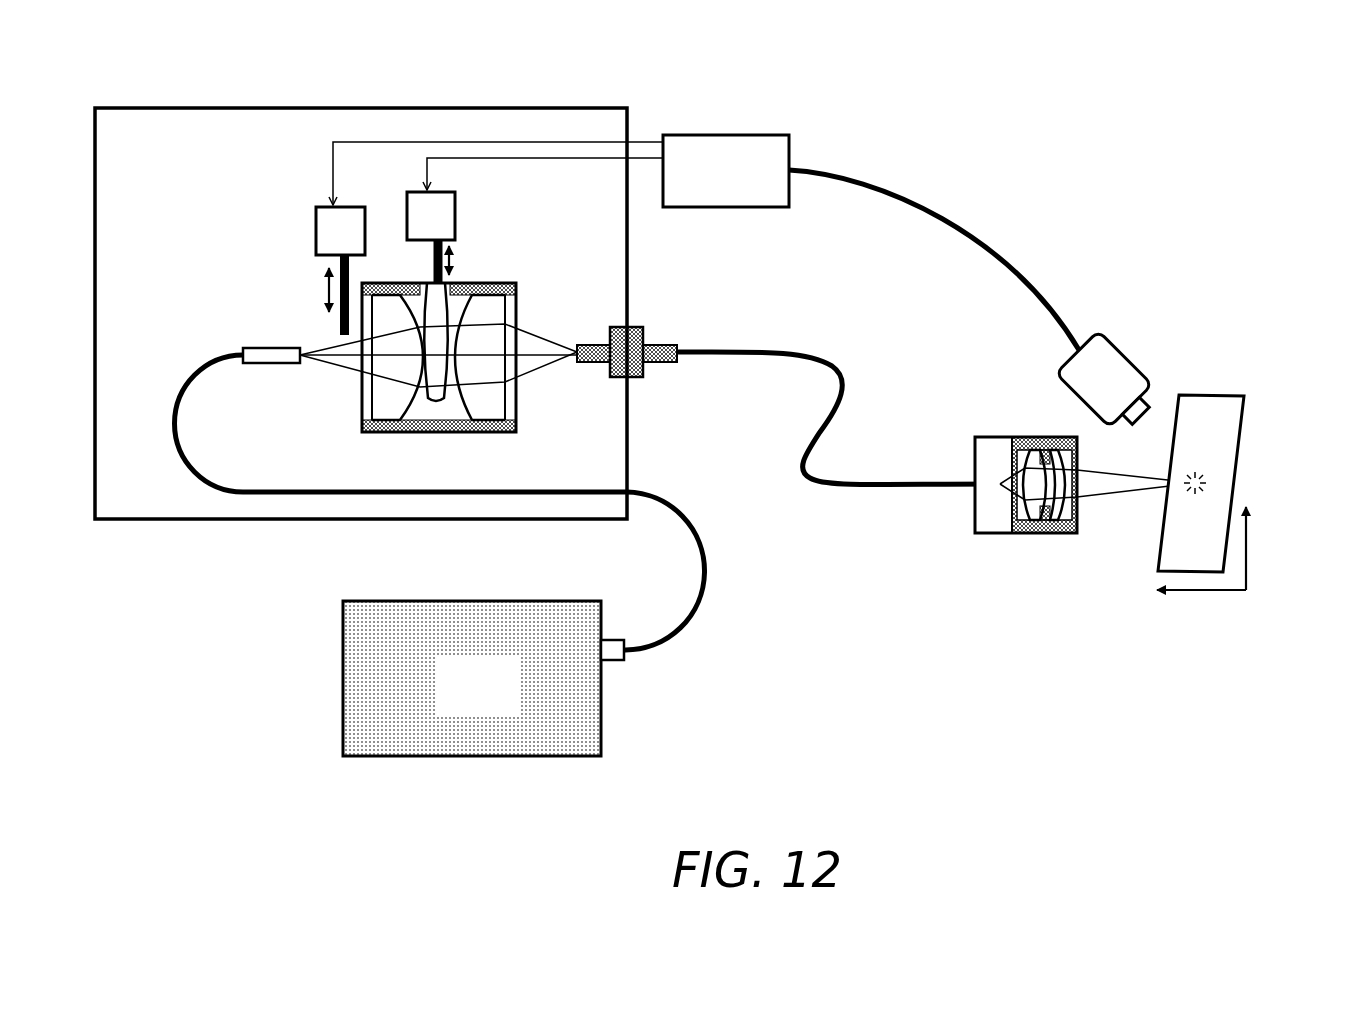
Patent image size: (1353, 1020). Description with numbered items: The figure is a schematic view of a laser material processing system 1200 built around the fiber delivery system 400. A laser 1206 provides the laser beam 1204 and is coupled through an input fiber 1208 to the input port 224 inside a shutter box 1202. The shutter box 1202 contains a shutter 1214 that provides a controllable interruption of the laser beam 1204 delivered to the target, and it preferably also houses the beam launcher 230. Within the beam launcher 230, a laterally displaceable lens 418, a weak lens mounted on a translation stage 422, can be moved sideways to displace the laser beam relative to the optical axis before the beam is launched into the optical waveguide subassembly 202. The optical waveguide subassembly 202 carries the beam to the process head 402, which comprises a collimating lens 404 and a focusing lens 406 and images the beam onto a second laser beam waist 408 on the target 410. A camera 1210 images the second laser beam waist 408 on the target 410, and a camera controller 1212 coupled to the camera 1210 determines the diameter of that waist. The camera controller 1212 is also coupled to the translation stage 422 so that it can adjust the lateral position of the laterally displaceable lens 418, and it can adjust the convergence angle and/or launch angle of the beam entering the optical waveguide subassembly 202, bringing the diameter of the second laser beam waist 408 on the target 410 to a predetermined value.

The laser material processing system 1200 is at (952, 72).
The shutter box 1202 is at (159, 214).
The camera controller 1212 is at (697, 185).
The shutter 1214 is at (316, 237).
The translation stage 422 is at (455, 222).
The beam launcher 230 is at (448, 380).
The laterally displaceable lens 418 is at (436, 391).
The input port 224 is at (275, 363).
The laser 1206 is at (449, 696).
The input fiber 1208 is at (683, 628).
The fiber delivery system 400 is at (912, 338).
The optical waveguide subassembly 202 is at (812, 476).
The process head 402 is at (1085, 500).
The collimating lens 404 is at (1022, 458).
The focusing lens 406 is at (1060, 517).
The laser beam 1204 is at (1112, 493).
The camera 1210 is at (1125, 348).
The target 410 is at (1237, 510).
The second laser beam waist 408 is at (1213, 477).